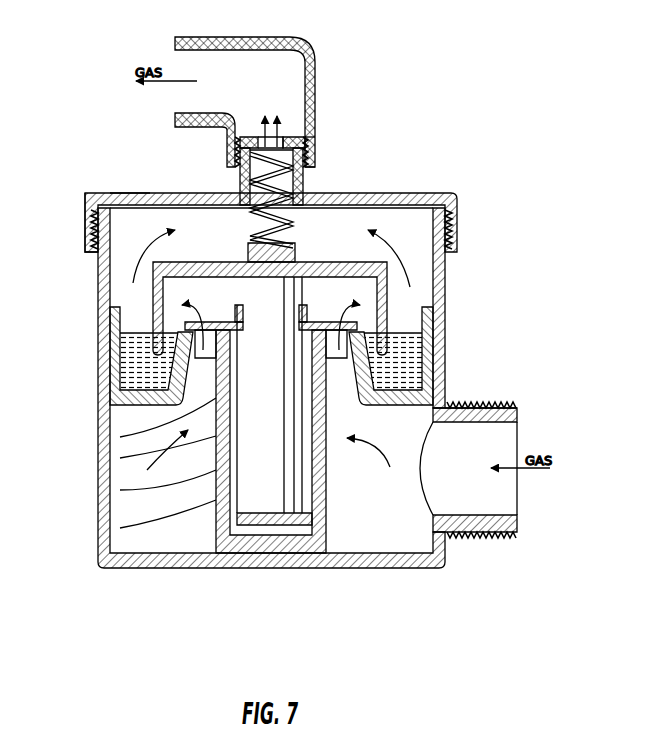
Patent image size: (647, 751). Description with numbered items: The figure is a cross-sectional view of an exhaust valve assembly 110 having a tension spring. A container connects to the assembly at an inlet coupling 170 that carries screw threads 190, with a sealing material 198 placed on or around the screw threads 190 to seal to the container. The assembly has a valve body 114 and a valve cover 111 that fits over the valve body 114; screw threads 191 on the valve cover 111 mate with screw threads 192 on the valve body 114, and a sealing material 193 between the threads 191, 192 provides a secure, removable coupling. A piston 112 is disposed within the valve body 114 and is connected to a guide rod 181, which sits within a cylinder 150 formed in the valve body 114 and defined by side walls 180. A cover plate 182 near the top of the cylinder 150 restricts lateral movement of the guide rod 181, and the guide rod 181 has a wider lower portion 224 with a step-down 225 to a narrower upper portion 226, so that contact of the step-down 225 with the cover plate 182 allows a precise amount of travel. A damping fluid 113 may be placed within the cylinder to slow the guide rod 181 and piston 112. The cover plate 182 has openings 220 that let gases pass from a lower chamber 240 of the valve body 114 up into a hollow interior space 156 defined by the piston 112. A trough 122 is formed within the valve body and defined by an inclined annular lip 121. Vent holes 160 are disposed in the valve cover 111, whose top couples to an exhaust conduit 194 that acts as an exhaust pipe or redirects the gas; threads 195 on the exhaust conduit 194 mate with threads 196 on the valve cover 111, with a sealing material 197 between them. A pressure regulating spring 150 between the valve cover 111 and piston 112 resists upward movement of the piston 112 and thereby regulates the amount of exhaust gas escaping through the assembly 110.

The exhaust valve assembly 110 is at (458, 40).
The valve cover 111 is at (412, 194).
The piston 112 is at (343, 196).
The liquid reservoir 113 is at (150, 345).
The valve body 114 is at (396, 560).
The annular lip 121 is at (110, 438).
The trough 122 is at (143, 396).
The cylinder / pressure regulating spring 150 is at (262, 187).
The hollow interior space 156 is at (386, 290).
The vent holes 160 is at (281, 143).
The inlet coupling 170 is at (510, 418).
The side walls 180 is at (110, 528).
The guide rod 181 is at (110, 488).
The cover plate 182 is at (118, 304).
The screw threads 190 is at (470, 405).
The screw threads 191 is at (92, 230).
The screw threads 192 is at (128, 196).
The sealing material 193 is at (88, 195).
The exhaust conduit 194 is at (255, 36).
The threads 195 is at (312, 140).
The threads 196 is at (313, 165).
The sealing material 197 is at (313, 143).
The sealing material 198 is at (505, 405).
The openings 220 is at (390, 325).
The wider lower portion 224 is at (222, 560).
The step-down 225 is at (110, 452).
The narrower upper portion 226 is at (200, 338).
The lower chamber 240 is at (352, 560).